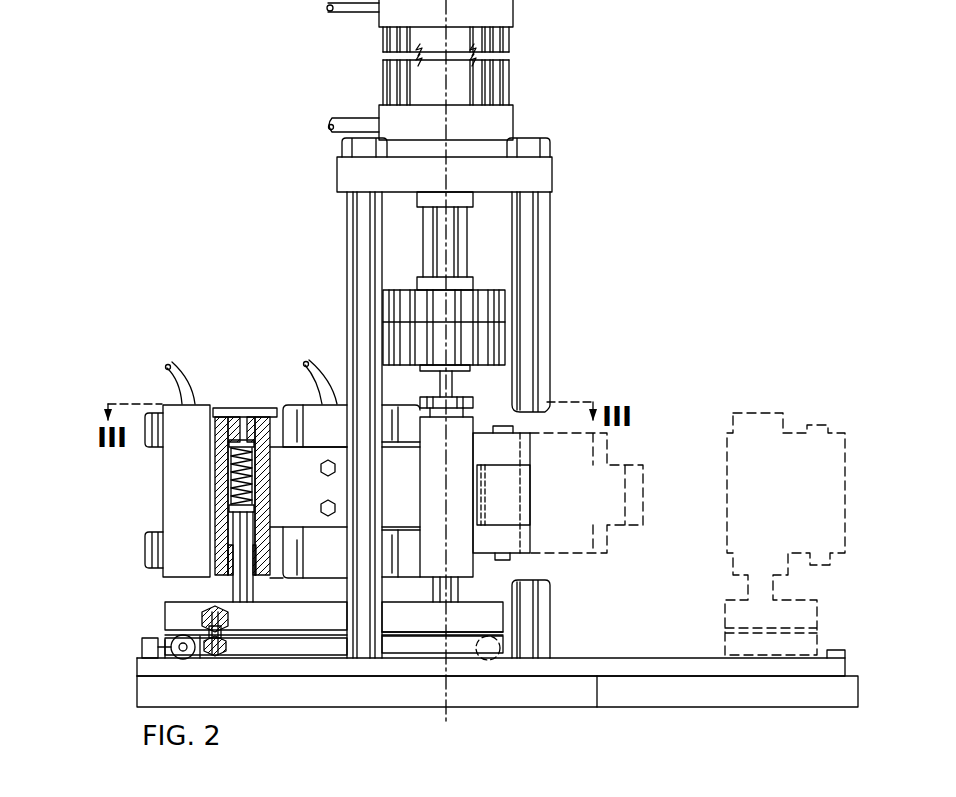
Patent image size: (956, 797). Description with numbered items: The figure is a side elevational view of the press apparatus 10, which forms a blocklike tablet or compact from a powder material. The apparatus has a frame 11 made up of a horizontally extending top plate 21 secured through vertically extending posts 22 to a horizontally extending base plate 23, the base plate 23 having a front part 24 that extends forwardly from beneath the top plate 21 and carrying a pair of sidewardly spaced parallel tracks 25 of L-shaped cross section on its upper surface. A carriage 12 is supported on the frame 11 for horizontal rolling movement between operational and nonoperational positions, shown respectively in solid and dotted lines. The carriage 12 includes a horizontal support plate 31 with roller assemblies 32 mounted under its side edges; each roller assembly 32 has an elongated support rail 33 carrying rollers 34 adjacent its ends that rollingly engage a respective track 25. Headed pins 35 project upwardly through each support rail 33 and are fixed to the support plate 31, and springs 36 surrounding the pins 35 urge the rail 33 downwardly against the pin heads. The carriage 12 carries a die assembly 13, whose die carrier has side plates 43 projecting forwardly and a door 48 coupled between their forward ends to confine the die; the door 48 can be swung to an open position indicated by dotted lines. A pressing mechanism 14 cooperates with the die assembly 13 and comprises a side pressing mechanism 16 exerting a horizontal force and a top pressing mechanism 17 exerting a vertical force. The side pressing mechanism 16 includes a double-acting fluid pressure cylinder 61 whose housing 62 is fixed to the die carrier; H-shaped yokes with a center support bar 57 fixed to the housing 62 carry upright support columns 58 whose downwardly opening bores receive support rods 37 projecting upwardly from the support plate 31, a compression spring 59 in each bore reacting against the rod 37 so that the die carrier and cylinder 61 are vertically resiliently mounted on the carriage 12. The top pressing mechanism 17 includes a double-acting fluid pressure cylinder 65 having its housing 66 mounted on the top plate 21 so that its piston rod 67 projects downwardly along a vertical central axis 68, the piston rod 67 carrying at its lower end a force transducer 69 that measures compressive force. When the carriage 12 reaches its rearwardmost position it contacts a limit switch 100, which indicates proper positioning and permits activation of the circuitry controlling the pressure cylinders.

The press apparatus 10 is at (226, 210).
The frame 11 is at (328, 237).
The carriage 12 is at (432, 660).
The die assembly 13 is at (487, 418).
The pressing mechanism 14 is at (398, 70).
The first or side pressing mechanism 16 is at (206, 368).
The second or top pressing mechanism 17 is at (513, 43).
The top plate 21 is at (549, 178).
The vertically extending posts 22 is at (358, 266).
The base plate 23 is at (153, 695).
The front part 24 is at (717, 693).
The tracks 25 is at (648, 670).
The support plate 31 is at (402, 623).
The roller assemblies 32 is at (320, 653).
The support rail 33 is at (290, 642).
The rollers 34 is at (138, 656).
The headed pins 35 is at (215, 658).
The springs 36 is at (200, 620).
The support rods 37 is at (233, 585).
The side plates 43 is at (410, 545).
The door 48 is at (510, 478).
The center support bar 57 is at (303, 463).
The upright support columns 58 is at (230, 428).
The compression spring 59 is at (230, 487).
The double-acting fluid pressure cylinder 61 is at (160, 504).
The housing 62 is at (170, 432).
The double-acting fluid pressure cylinder 65 is at (513, 10).
The housing 66 is at (466, 90).
The piston rod 67 is at (458, 238).
The central axis 68 is at (445, 253).
The force transducer 69 is at (500, 305).
The limit switch 100 is at (142, 648).